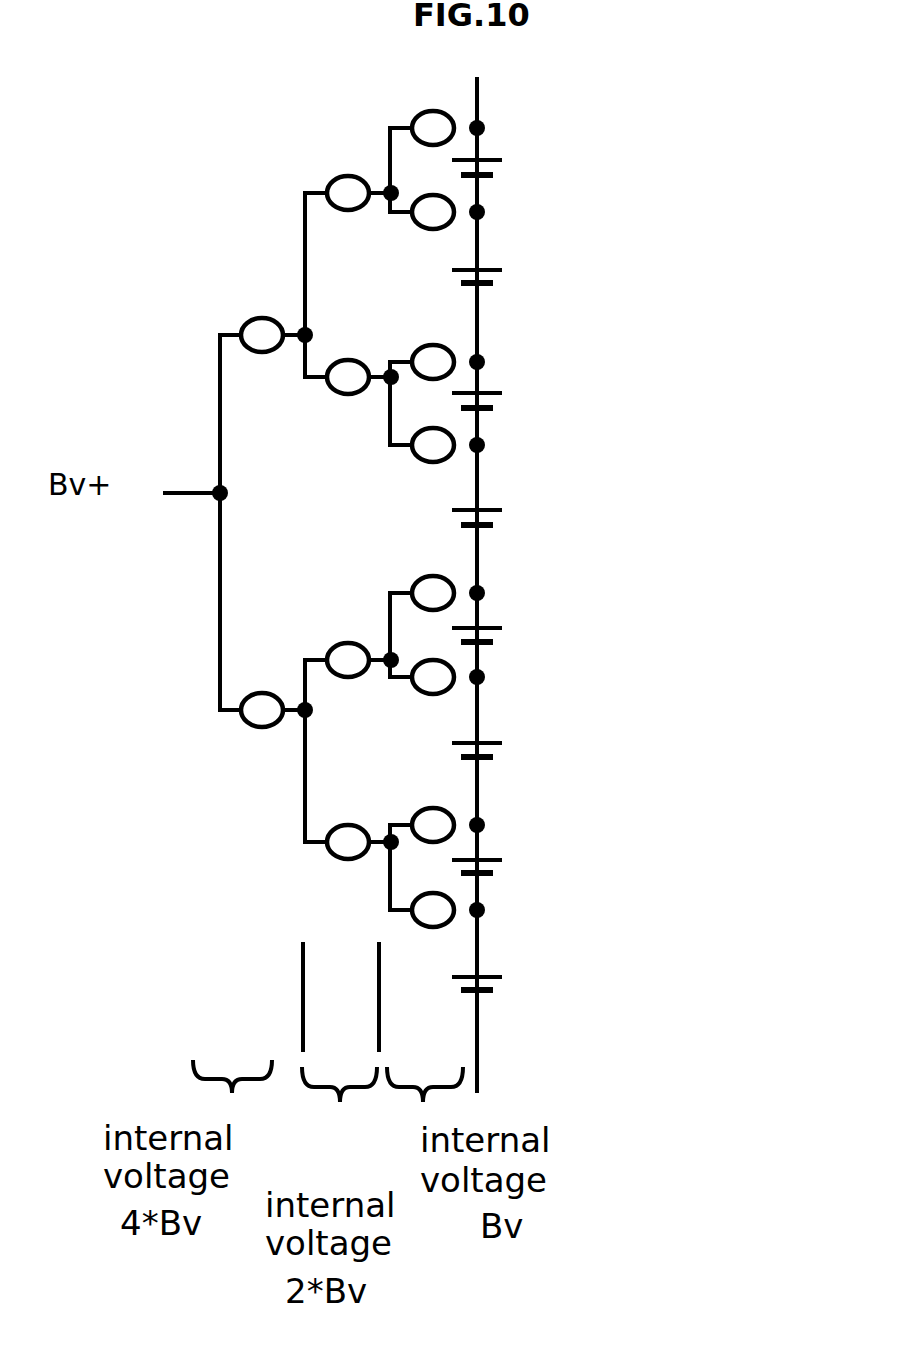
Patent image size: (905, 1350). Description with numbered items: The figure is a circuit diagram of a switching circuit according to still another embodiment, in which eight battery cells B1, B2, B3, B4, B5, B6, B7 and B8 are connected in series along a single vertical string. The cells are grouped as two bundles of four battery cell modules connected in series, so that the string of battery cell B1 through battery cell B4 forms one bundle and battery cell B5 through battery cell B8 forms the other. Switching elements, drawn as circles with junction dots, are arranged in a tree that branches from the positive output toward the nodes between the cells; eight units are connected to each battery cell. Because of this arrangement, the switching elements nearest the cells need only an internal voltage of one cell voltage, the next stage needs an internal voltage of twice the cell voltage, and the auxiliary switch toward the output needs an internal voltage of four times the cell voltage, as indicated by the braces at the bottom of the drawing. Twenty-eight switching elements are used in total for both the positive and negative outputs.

The battery cell B1 is at (510, 985).
The battery cell B2 is at (510, 868).
The battery cell B3 is at (510, 751).
The battery cell B4 is at (510, 636).
The battery cell B5 is at (510, 518).
The battery cell B6 is at (510, 402).
The battery cell B7 is at (510, 277).
The battery cell B8 is at (510, 168).